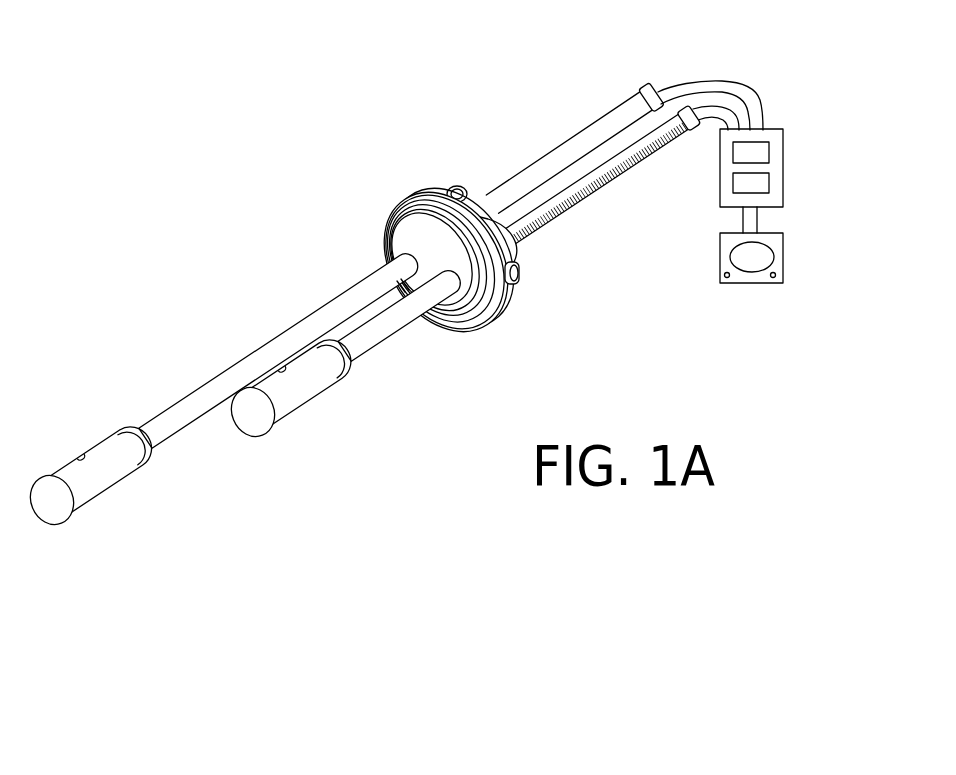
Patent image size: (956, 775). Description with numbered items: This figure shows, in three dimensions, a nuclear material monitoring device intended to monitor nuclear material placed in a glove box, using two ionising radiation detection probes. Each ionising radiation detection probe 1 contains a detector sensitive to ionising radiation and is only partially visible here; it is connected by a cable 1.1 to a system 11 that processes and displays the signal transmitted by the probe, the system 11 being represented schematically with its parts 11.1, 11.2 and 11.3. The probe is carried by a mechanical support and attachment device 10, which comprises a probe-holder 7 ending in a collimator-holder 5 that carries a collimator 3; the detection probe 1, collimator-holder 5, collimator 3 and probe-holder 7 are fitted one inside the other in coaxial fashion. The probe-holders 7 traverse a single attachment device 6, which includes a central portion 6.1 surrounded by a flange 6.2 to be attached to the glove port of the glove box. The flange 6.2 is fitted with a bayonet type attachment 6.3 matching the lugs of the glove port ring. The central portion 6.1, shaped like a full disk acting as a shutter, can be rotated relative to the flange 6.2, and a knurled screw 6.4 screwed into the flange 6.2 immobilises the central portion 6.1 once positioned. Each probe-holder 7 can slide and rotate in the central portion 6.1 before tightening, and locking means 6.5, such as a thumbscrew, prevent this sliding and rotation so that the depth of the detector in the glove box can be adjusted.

The ionising radiation detection probe 1 is at (672, 81).
The connection cable 1.1 is at (711, 85).
The collimator 3 is at (83, 497).
The collimator-holder 5 is at (118, 469).
The attachment device 6 is at (491, 230).
The central portion 6.1 is at (518, 241).
The flange 6.2 is at (500, 283).
The bayonet type attachment 6.3 is at (390, 210).
The knurled screw 6.4 is at (461, 186).
The locking means 6.5 is at (520, 268).
The probe-holder 7 is at (572, 188).
The mechanical support and attachment device 10 is at (208, 383).
The system to process and display a signal 11 is at (729, 206).
The evaluation module 11.1 is at (733, 153).
The signal module 11.2 is at (736, 183).
The display unit 11.3 is at (720, 257).